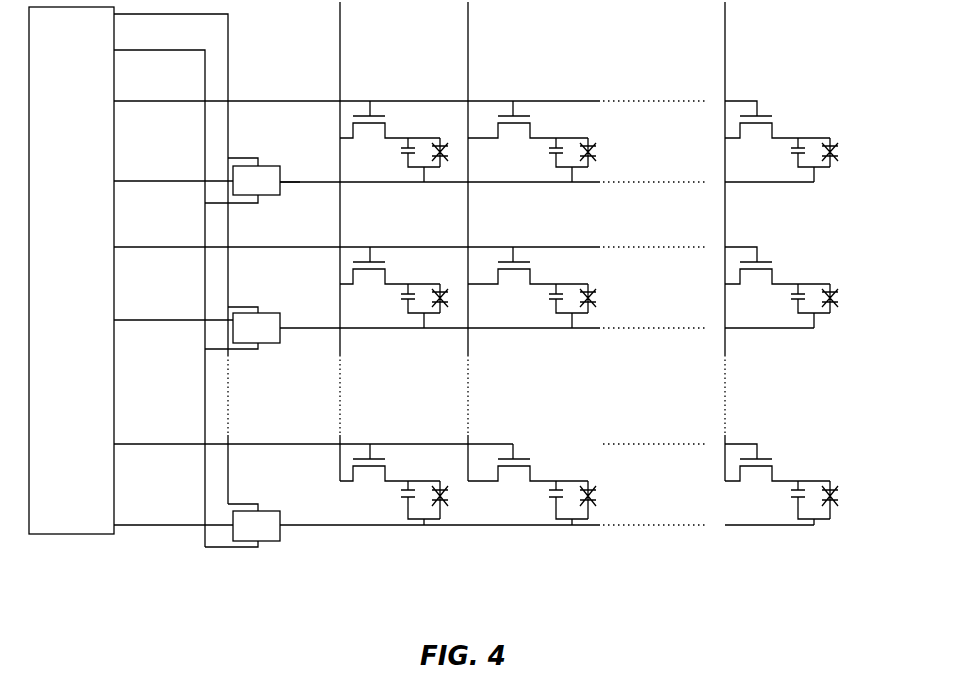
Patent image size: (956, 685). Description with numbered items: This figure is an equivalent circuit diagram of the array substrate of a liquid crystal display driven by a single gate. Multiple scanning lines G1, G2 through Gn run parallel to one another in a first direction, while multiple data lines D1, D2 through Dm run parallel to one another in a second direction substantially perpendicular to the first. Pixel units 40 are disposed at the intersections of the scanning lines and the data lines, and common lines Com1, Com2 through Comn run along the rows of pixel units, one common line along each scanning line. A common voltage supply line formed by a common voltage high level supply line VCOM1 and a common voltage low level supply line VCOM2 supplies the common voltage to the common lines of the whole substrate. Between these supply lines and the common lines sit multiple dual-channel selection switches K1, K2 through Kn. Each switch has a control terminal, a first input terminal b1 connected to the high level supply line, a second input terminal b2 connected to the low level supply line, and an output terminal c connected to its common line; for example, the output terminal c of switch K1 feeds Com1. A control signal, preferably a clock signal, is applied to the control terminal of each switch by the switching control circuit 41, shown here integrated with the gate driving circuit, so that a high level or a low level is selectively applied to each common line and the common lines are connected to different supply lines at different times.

The pixel unit 40 is at (397, 121).
The switching control circuit 41 is at (71, 270).
The dual-channel selection switch K1 is at (256, 180).
The dual-channel selection switch K2 is at (242, 328).
The dual-channel selection switch Kn is at (242, 525).
The scanning line G1 is at (357, 92).
The scanning line G2 is at (357, 240).
The scanning line Gn is at (313, 435).
The common line Com1 is at (357, 172).
The common line Com2 is at (357, 310).
The common line Comn is at (357, 517).
The data line D1 is at (355, 241).
The data line D2 is at (483, 241).
The data line Dm is at (740, 241).
The common voltage high level supply line VCOM1 is at (169, 293).
The common voltage low level supply line VCOM2 is at (181, 259).
The first input terminal b1 is at (252, 163).
The second input terminal b2 is at (239, 207).
The output terminal c is at (290, 187).